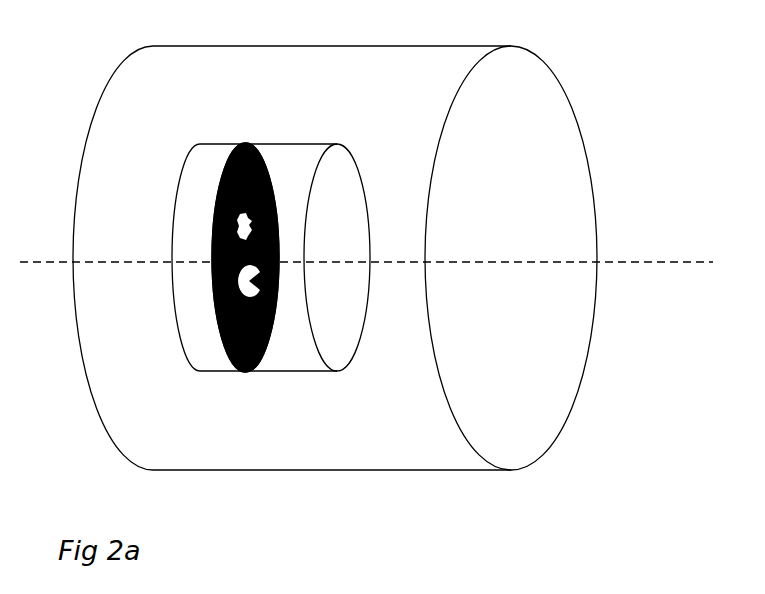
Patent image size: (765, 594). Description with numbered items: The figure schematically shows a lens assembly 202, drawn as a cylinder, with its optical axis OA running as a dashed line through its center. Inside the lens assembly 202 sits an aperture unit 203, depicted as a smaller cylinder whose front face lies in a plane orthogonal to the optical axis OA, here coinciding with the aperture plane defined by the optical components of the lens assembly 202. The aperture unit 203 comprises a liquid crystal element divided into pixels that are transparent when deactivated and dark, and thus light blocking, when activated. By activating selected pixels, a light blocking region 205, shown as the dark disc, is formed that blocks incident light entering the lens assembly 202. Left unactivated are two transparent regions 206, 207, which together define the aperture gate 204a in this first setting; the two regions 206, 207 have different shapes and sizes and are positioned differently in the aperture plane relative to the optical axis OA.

The lens assembly 202 is at (100, 98).
The aperture unit 203 is at (215, 373).
The aperture gate 204a is at (214, 156).
The light blocking region 205 is at (260, 143).
The transparent region 206 is at (278, 227).
The transparent region 207 is at (278, 278).
The optical axis OA is at (650, 263).